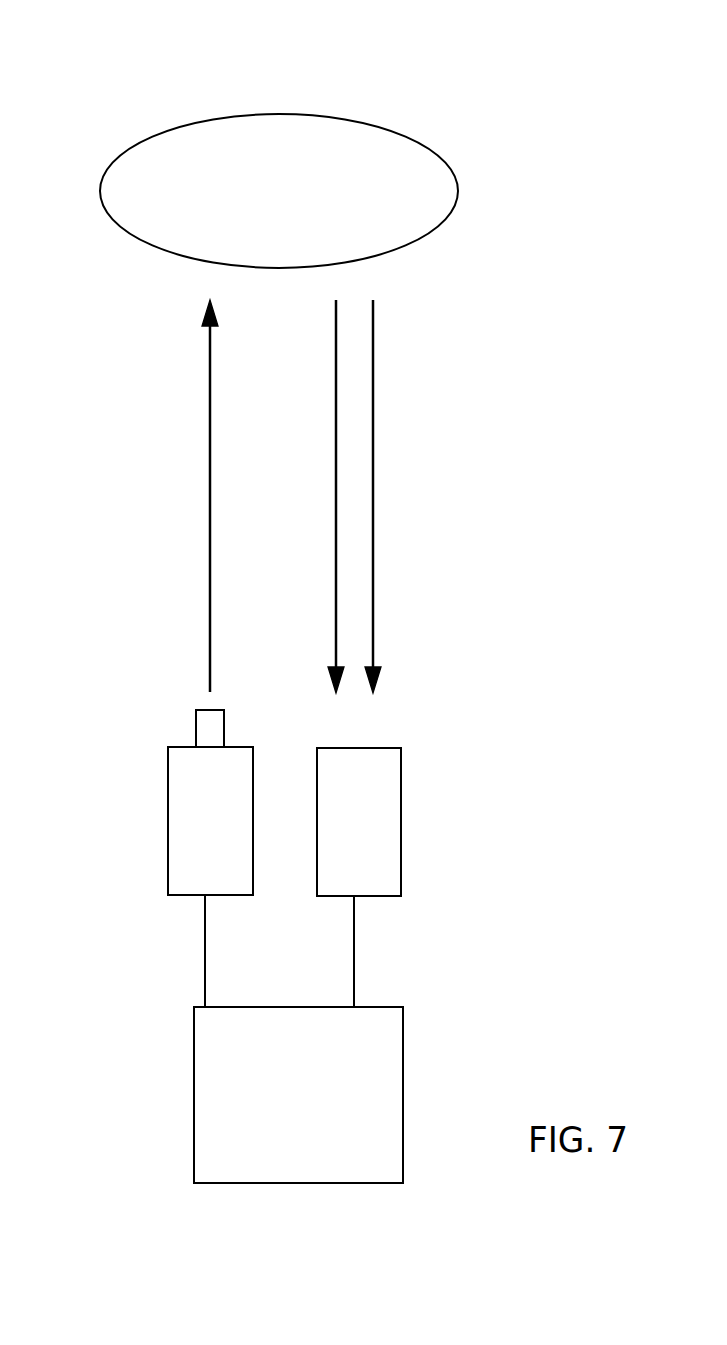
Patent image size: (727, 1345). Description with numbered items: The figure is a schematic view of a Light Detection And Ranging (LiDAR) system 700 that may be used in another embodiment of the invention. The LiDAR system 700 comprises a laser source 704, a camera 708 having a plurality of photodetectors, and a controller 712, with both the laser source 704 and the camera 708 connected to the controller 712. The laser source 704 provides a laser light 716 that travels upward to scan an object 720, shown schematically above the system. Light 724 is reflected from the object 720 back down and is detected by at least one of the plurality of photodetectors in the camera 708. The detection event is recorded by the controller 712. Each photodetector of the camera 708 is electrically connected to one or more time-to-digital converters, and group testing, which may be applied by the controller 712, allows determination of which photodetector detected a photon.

The LiDAR system 700 is at (173, 78).
The laser source 704 is at (183, 860).
The camera 708 is at (372, 785).
The controller 712 is at (298, 1039).
The laser light 716 is at (209, 540).
The object 720 is at (279, 191).
The light 724 is at (373, 597).